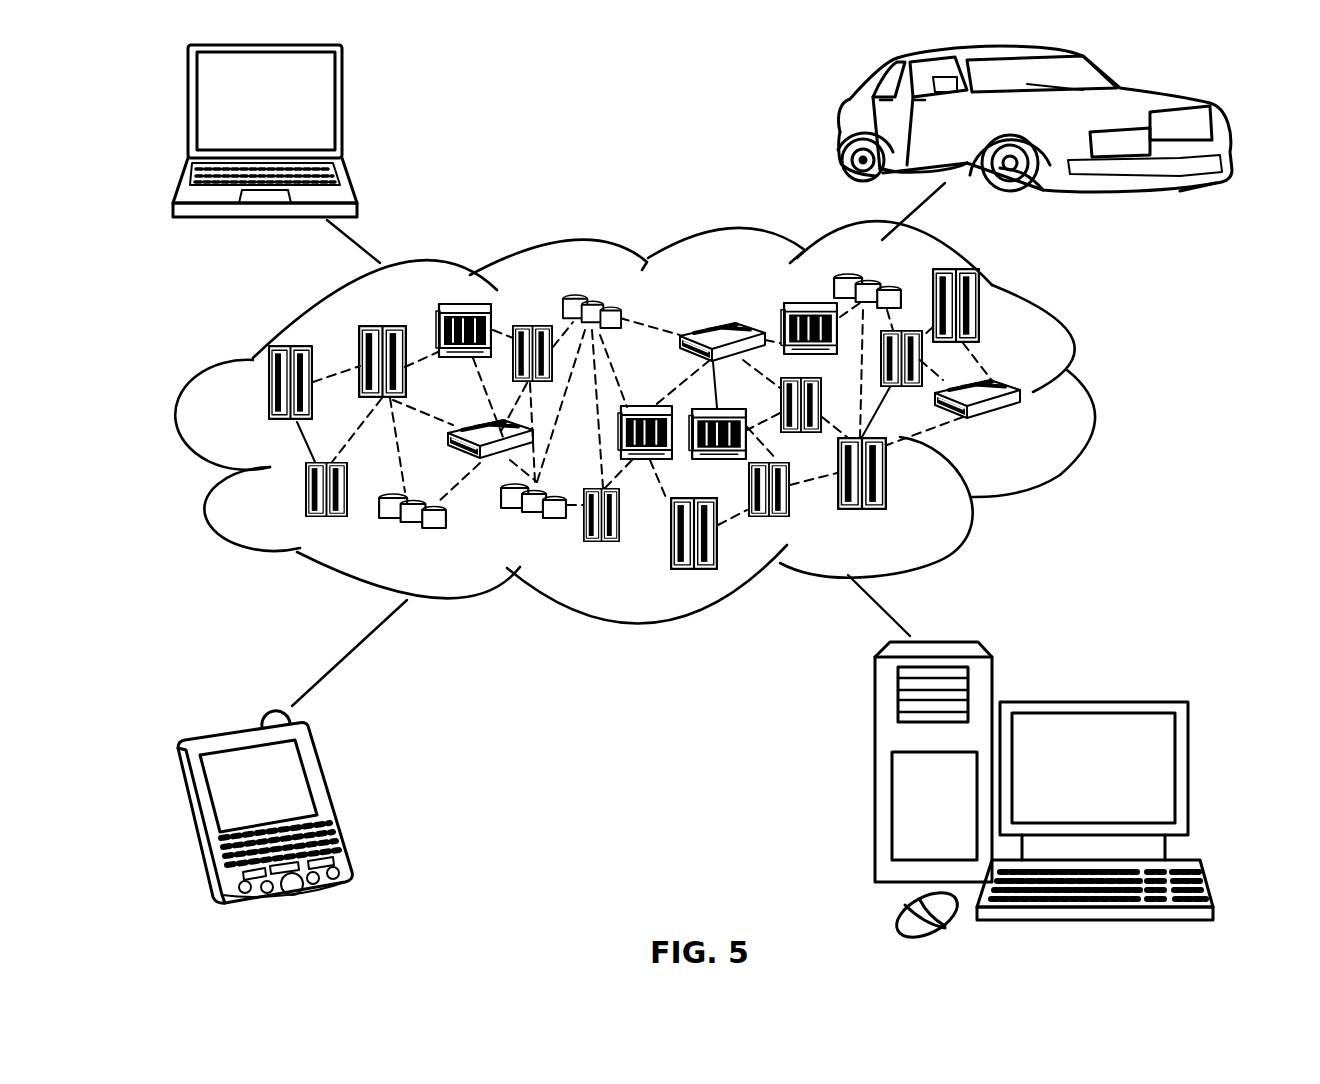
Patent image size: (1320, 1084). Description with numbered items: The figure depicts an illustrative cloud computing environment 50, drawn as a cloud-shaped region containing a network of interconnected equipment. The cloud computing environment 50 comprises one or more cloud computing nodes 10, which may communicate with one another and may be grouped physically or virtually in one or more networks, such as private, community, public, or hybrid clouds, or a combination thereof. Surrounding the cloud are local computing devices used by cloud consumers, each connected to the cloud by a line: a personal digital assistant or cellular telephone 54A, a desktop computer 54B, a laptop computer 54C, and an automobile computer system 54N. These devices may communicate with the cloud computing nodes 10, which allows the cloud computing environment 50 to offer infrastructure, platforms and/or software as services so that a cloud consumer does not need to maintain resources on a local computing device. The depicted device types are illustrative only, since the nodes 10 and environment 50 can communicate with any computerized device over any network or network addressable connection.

The cloud computing node 10 is at (1024, 427).
The cloud computing environment 50 is at (1090, 397).
The personal digital assistant or cellular telephone 54A is at (332, 798).
The desktop computer 54B is at (1090, 702).
The laptop computer 54C is at (345, 109).
The automobile computer system 54N is at (840, 125).